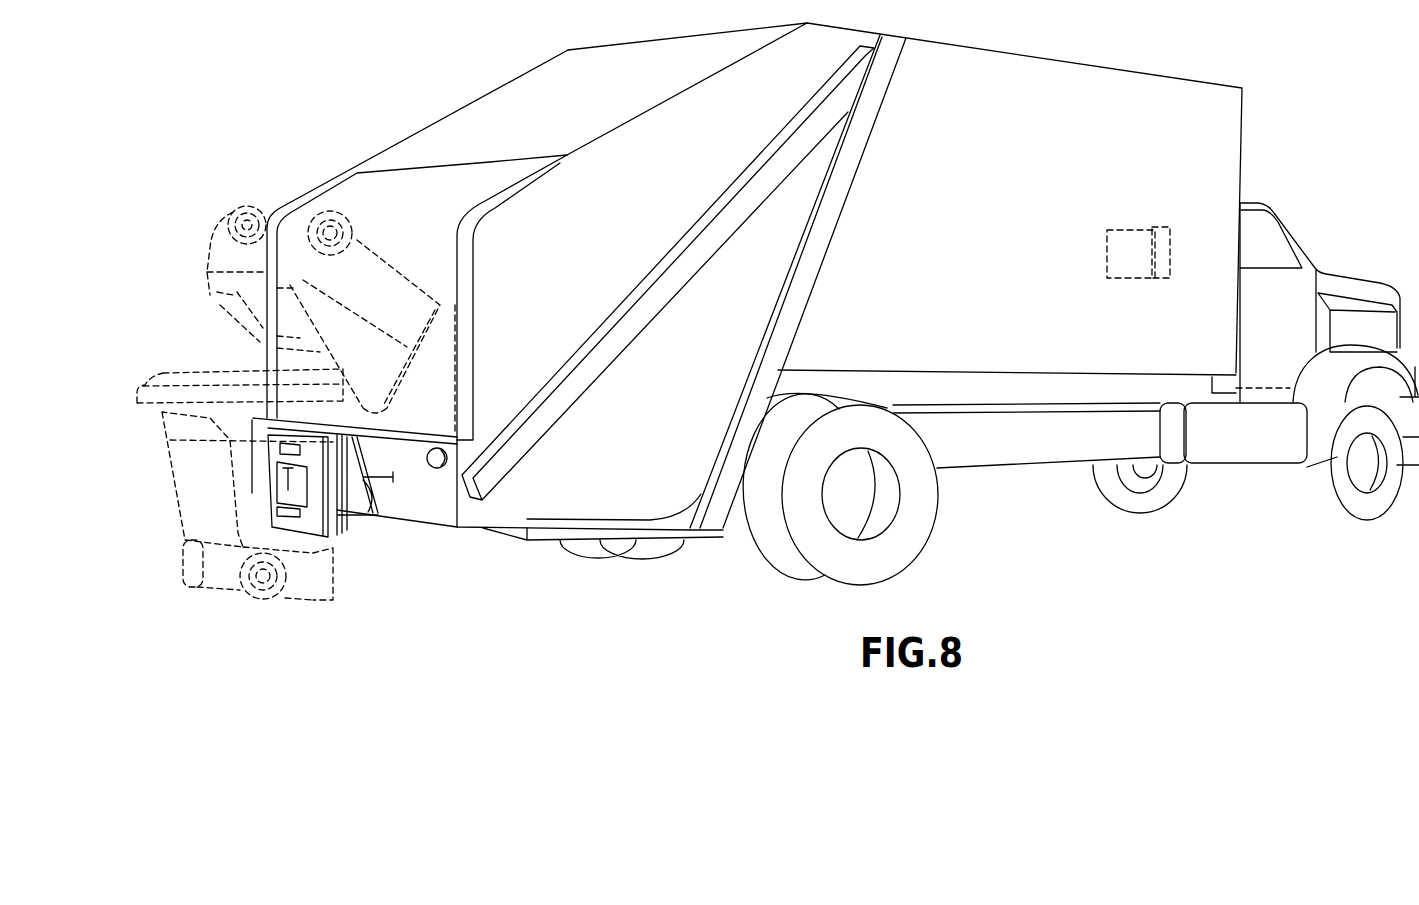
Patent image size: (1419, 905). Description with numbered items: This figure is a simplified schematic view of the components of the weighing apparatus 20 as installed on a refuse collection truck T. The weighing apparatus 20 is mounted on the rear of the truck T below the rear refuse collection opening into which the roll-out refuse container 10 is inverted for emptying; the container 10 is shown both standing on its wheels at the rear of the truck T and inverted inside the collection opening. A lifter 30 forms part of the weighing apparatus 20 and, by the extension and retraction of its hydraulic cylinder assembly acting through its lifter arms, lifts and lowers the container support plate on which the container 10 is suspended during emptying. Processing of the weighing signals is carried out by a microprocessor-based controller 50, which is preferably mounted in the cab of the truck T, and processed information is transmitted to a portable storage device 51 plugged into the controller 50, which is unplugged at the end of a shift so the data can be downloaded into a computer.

The refuse container 10 is at (180, 508).
The weighing apparatus 20 is at (360, 527).
The lifter 30 is at (347, 553).
The controller 50 is at (1115, 231).
The portable storage device 51 is at (1141, 226).
The refuse collection truck T is at (1013, 490).